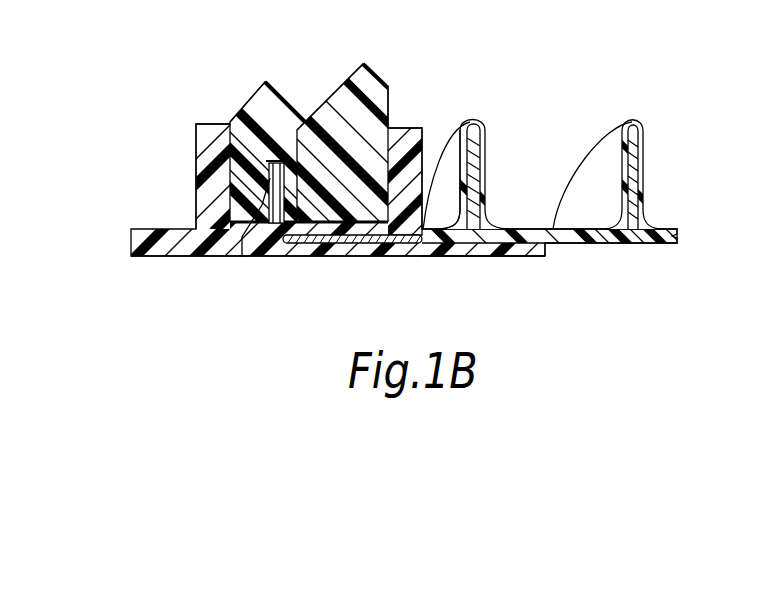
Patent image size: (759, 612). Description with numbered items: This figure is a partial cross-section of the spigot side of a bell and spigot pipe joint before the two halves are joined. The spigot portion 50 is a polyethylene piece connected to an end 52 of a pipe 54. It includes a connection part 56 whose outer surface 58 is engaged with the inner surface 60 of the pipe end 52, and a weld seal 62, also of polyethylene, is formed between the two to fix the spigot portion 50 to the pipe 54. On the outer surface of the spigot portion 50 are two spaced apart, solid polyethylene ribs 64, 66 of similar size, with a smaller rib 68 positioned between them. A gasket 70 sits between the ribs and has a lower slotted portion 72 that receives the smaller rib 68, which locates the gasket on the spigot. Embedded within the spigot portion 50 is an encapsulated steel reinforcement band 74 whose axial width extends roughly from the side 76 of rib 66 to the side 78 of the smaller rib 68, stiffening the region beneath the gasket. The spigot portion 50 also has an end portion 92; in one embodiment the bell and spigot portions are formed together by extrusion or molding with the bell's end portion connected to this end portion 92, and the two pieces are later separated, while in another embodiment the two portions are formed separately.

The spigot portion 50 is at (165, 266).
The pipe end 52 is at (431, 225).
The pipe 54 is at (663, 229).
The connection part 56 is at (493, 262).
The outer surface 58 is at (533, 229).
The inner surface 60 is at (465, 257).
The weld seal 62 is at (553, 246).
The rib 64 is at (200, 150).
The rib 66 is at (412, 135).
The smaller rib 68 is at (242, 257).
The gasket 70 is at (343, 92).
The lower slotted portion 72 is at (233, 124).
The encapsulated steel reinforcement band 74 is at (357, 257).
The side of rib 76 is at (446, 129).
The side of smaller rib 78 is at (305, 185).
The end portion 92 is at (543, 258).